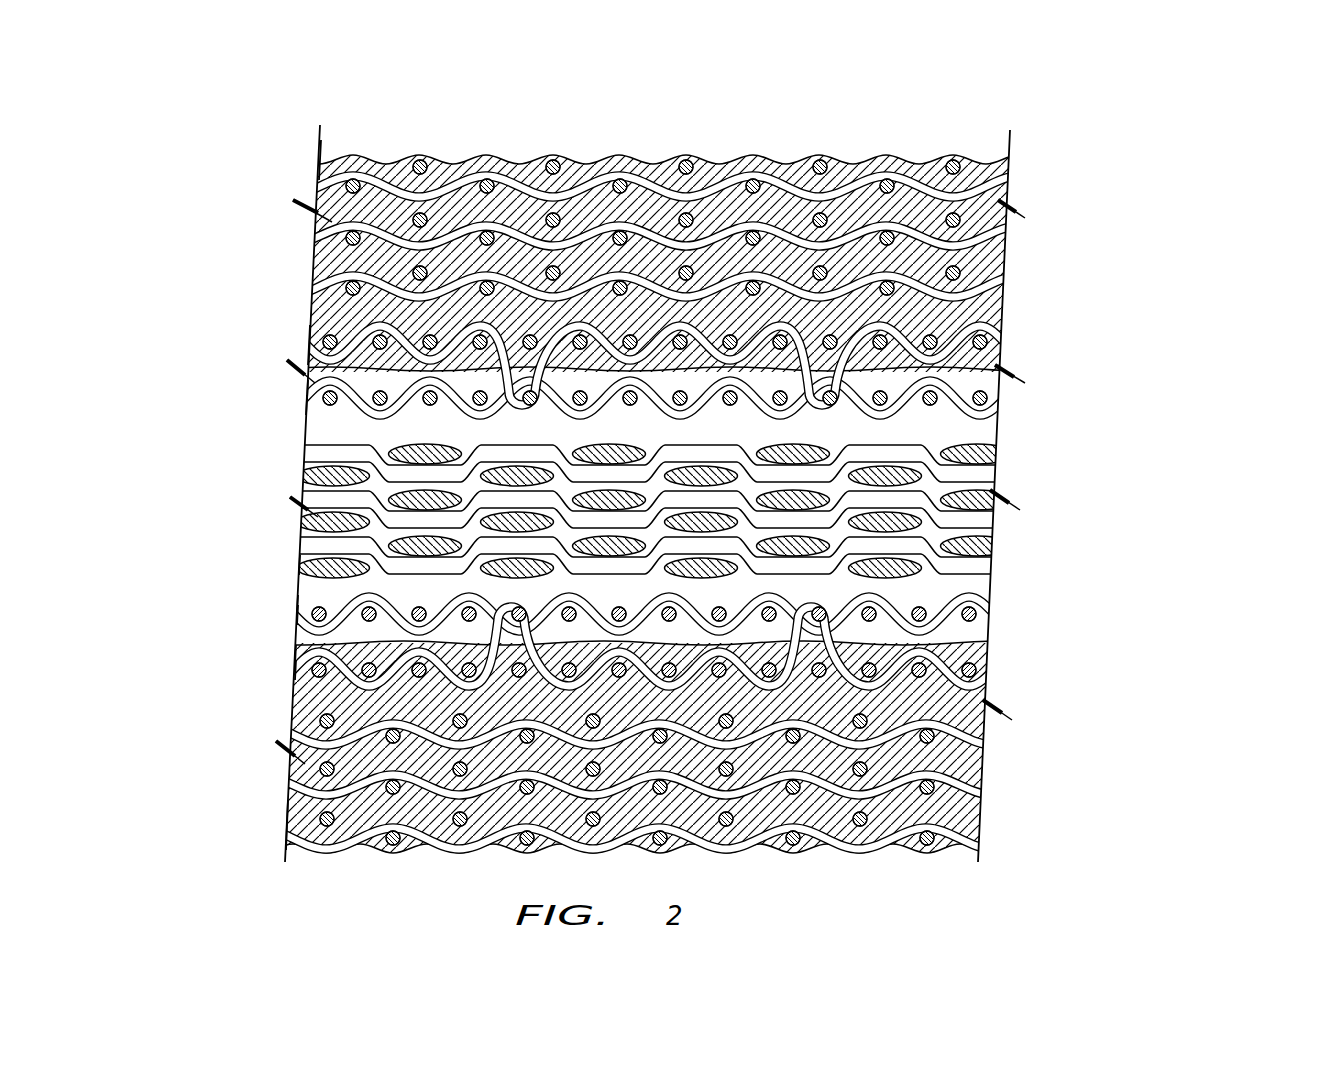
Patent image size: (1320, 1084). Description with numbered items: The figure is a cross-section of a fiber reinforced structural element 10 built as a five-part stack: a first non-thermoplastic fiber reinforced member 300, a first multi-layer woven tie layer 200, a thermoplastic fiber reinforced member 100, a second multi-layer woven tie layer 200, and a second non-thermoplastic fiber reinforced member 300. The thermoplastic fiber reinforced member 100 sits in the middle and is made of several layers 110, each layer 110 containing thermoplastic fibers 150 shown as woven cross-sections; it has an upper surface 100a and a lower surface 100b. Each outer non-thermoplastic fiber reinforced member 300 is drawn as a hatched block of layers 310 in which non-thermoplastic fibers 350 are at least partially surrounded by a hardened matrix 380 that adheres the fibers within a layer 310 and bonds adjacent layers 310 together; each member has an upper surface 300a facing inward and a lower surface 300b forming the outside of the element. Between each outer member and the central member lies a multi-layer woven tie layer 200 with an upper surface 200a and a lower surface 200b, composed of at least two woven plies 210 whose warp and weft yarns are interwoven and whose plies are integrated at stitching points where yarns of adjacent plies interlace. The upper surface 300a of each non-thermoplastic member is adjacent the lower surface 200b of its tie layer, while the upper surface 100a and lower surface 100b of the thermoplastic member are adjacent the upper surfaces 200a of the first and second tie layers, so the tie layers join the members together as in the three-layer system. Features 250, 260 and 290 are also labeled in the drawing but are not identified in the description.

The fiber reinforced structural element 10 is at (1186, 174).
The thermoplastic fiber reinforced member 100 is at (687, 510).
The layer 110 is at (678, 555).
The thermoplastic fibers 150 is at (305, 486).
The multi-layer woven tie layer 200 is at (722, 503).
The woven ply 210 is at (1010, 695).
The inner surface of intermediate layer 250 is at (997, 440).
The interface of intermediate and outer layer 260 is at (1003, 300).
The stitching yarn loop 290 is at (528, 600).
The non-thermoplastic fiber reinforced member 300 is at (664, 508).
The layer 310 is at (620, 511).
The non-thermoplastic fibers 350 is at (765, 832).
The hardened matrix 380 is at (828, 805).
The upper surface of the thermoplastic fiber reinforced member 100a is at (297, 603).
The lower surface of the thermoplastic fiber reinforced member 100b is at (290, 565).
The upper surface of the multi-layer woven tie layer 200a is at (297, 616).
The lower surface of the multi-layer woven tie layer 200b is at (297, 660).
The upper surface of the non-thermoplastic fiber reinforced member 300a is at (297, 672).
The lower surface of the non-thermoplastic fiber reinforced member 300b is at (290, 850).